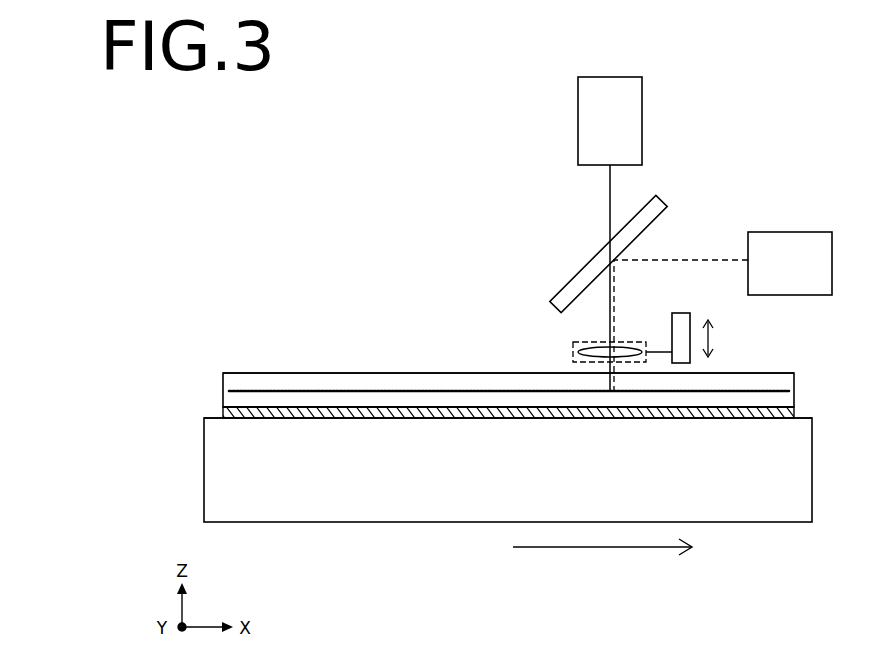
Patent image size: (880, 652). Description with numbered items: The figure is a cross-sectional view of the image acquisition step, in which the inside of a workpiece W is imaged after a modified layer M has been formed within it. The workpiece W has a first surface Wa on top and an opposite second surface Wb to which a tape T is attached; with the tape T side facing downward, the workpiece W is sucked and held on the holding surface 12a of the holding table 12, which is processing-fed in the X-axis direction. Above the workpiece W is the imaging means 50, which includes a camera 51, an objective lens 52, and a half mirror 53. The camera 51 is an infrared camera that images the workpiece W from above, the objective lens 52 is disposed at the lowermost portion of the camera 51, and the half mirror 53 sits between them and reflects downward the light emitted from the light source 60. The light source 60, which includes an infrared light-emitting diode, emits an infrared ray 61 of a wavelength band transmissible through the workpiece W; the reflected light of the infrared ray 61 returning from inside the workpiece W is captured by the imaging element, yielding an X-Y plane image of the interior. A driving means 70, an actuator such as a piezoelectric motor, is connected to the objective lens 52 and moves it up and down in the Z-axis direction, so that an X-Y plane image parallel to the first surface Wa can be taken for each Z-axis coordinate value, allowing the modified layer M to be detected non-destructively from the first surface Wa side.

The holding table 12 is at (440, 500).
The holding surface 12a is at (345, 419).
The tape T is at (760, 419).
The workpiece W is at (293, 380).
The first surface Wa is at (405, 373).
The second surface Wb is at (448, 408).
The modified layer M is at (353, 391).
The imaging means 50 is at (593, 212).
The camera 51 is at (578, 101).
The objective lens 52 is at (618, 347).
The half mirror 53 is at (658, 206).
The light source 60 is at (775, 232).
The infrared ray 61 is at (690, 258).
The driving means 70 is at (685, 322).